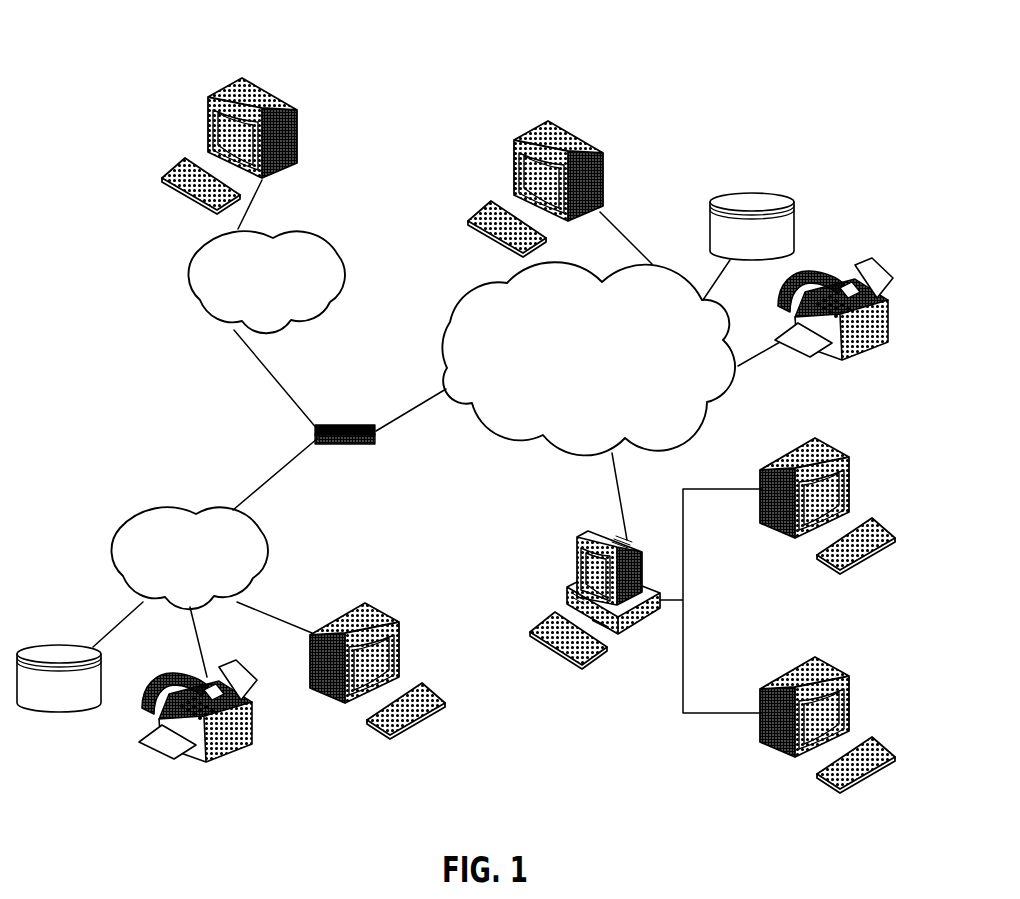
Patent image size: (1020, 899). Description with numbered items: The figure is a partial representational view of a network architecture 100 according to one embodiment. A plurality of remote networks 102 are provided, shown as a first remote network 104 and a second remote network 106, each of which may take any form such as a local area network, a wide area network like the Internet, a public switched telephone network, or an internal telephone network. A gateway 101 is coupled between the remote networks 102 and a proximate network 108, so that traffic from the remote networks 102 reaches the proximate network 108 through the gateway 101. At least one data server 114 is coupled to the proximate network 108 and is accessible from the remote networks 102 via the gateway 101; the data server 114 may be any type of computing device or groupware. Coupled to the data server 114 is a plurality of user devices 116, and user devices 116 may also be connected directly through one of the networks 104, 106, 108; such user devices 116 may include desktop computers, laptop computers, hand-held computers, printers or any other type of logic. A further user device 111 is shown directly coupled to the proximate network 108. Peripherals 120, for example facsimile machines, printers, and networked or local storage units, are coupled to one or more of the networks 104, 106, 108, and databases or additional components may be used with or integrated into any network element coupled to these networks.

The architecture 100 is at (151, 66).
The gateway 101 is at (331, 424).
The remote networks 102 is at (176, 336).
The first remote network 104 is at (117, 533).
The second remote network 106 is at (340, 252).
The proximate network 108 is at (693, 427).
The user device 111 is at (604, 152).
The data server 114 is at (578, 554).
The user devices 116 is at (299, 116).
The peripheral 120 is at (793, 203).